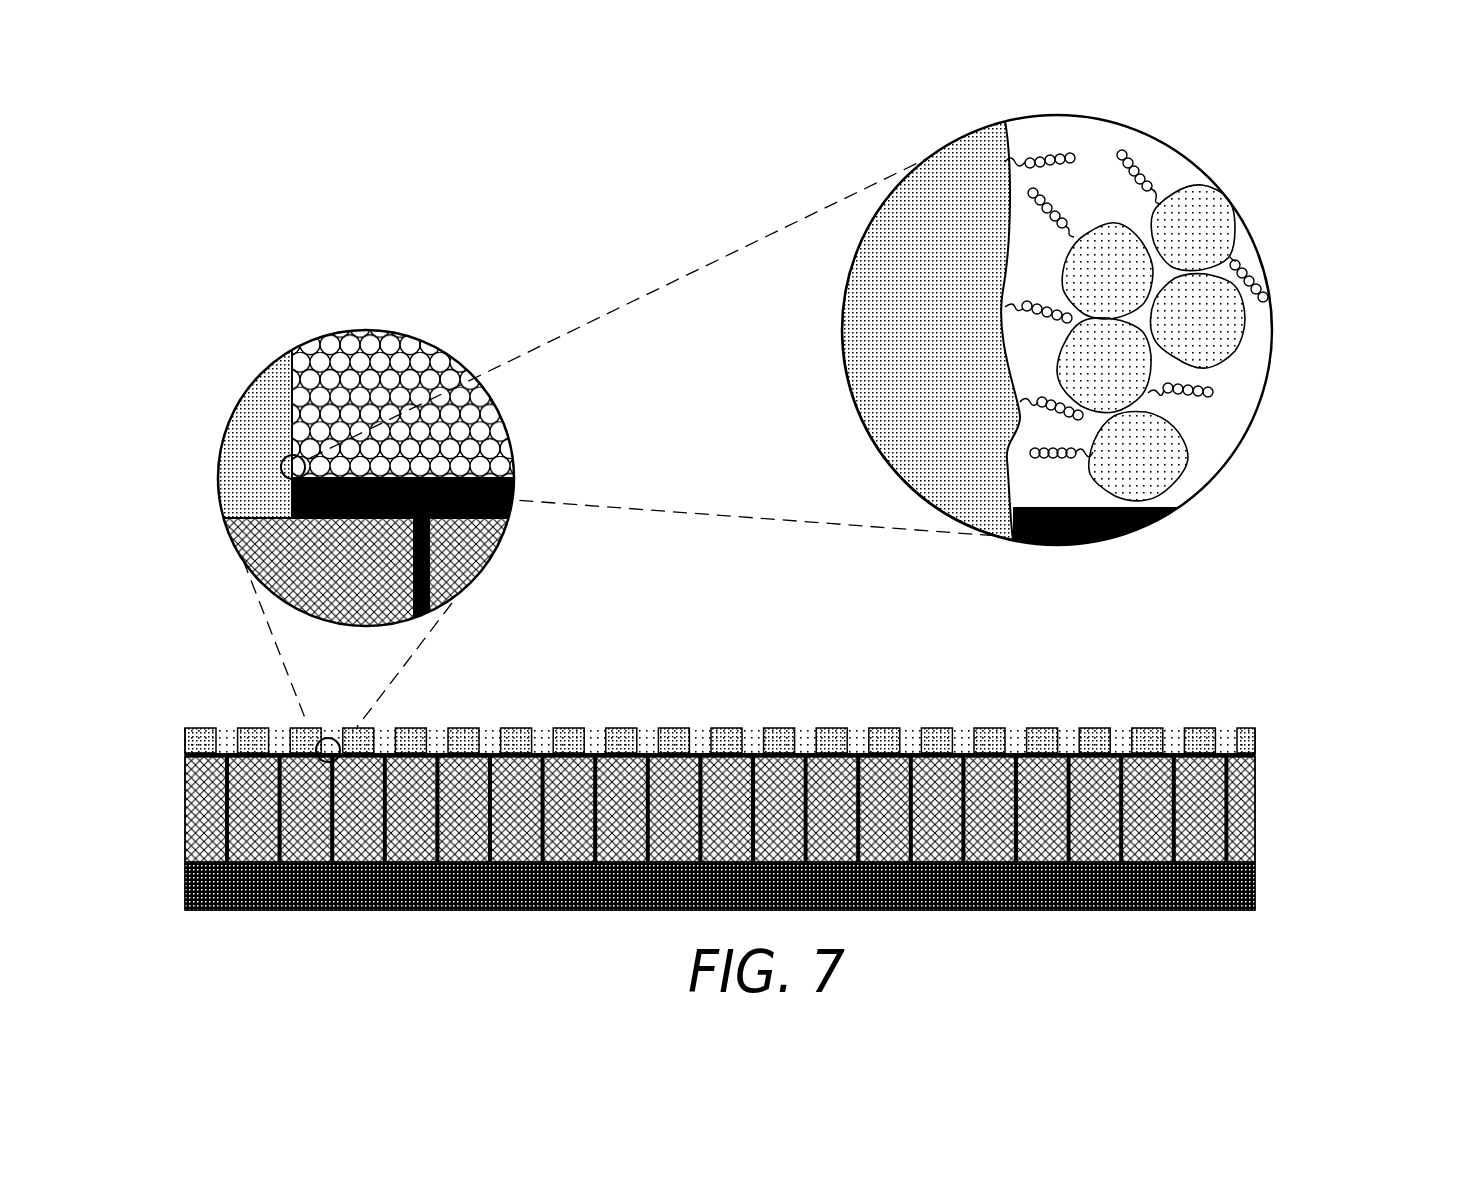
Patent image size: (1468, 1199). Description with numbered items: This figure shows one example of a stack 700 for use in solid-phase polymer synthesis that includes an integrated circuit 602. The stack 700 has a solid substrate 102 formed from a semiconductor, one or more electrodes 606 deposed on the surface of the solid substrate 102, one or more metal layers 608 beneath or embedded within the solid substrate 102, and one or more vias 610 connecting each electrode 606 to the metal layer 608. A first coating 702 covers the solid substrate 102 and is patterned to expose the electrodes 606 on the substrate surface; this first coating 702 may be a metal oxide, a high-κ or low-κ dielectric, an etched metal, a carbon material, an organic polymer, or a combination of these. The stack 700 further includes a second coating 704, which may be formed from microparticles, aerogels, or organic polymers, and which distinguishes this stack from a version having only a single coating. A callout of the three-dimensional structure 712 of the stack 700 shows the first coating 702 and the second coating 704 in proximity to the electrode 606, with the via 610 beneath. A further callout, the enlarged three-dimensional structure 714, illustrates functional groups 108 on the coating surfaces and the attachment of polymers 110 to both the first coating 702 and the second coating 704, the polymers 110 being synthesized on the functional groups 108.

The stack 700 is at (165, 145).
The first coating 702 is at (248, 372).
The second coating 704 is at (393, 318).
The electrode 606 is at (520, 480).
The three-dimensional structure 712 is at (520, 552).
The via 610 is at (437, 573).
The enlarged three-dimensional structure 714 is at (1057, 562).
The functional group 108 is at (1238, 255).
The polymer 110 is at (1215, 403).
The integrated circuit 602 is at (177, 913).
The solid substrate 102 is at (802, 690).
The metal layer 608 is at (812, 886).